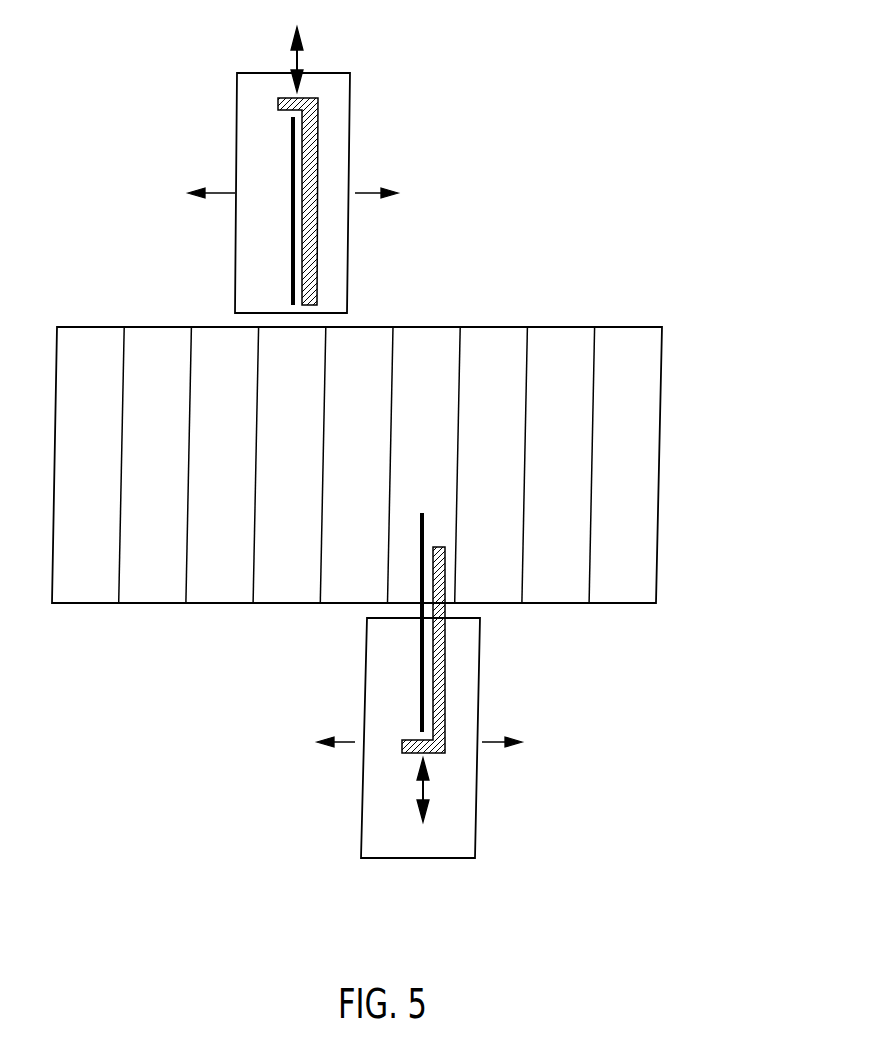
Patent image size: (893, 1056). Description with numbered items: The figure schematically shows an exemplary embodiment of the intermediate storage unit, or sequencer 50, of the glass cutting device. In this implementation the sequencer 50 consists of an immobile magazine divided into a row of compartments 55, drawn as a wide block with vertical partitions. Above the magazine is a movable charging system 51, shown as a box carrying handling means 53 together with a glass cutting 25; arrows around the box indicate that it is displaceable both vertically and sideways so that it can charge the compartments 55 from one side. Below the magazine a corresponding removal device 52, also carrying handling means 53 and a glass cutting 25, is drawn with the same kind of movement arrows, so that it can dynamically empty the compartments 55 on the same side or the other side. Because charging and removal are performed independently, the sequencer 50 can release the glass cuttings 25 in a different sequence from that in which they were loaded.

The glass cuttings 25 is at (291, 228).
The sequencer 50 is at (692, 452).
The movable charging system 51 is at (337, 82).
The removal device 52 is at (467, 843).
The handling means 53 is at (316, 253).
The compartment 55 is at (495, 350).